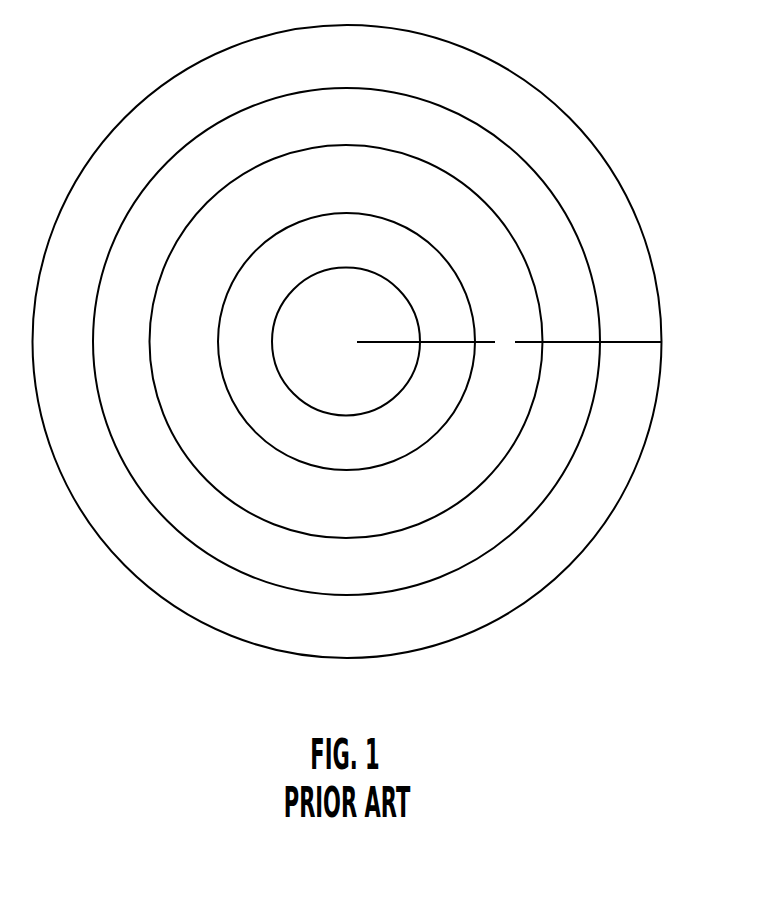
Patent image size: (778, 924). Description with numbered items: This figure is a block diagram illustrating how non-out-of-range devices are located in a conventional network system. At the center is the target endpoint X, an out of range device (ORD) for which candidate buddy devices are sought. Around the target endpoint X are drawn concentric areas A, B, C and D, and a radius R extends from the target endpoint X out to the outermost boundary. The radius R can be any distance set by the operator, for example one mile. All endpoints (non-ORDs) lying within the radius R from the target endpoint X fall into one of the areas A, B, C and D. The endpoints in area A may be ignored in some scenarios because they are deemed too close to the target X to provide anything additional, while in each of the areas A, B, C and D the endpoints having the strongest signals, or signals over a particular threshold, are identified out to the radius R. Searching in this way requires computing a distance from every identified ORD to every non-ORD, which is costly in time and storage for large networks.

The area D is at (347, 341).
The area C is at (346, 341).
The area B is at (346, 341).
The area A is at (346, 341).
The target endpoint X is at (346, 342).
The radius R is at (509, 342).